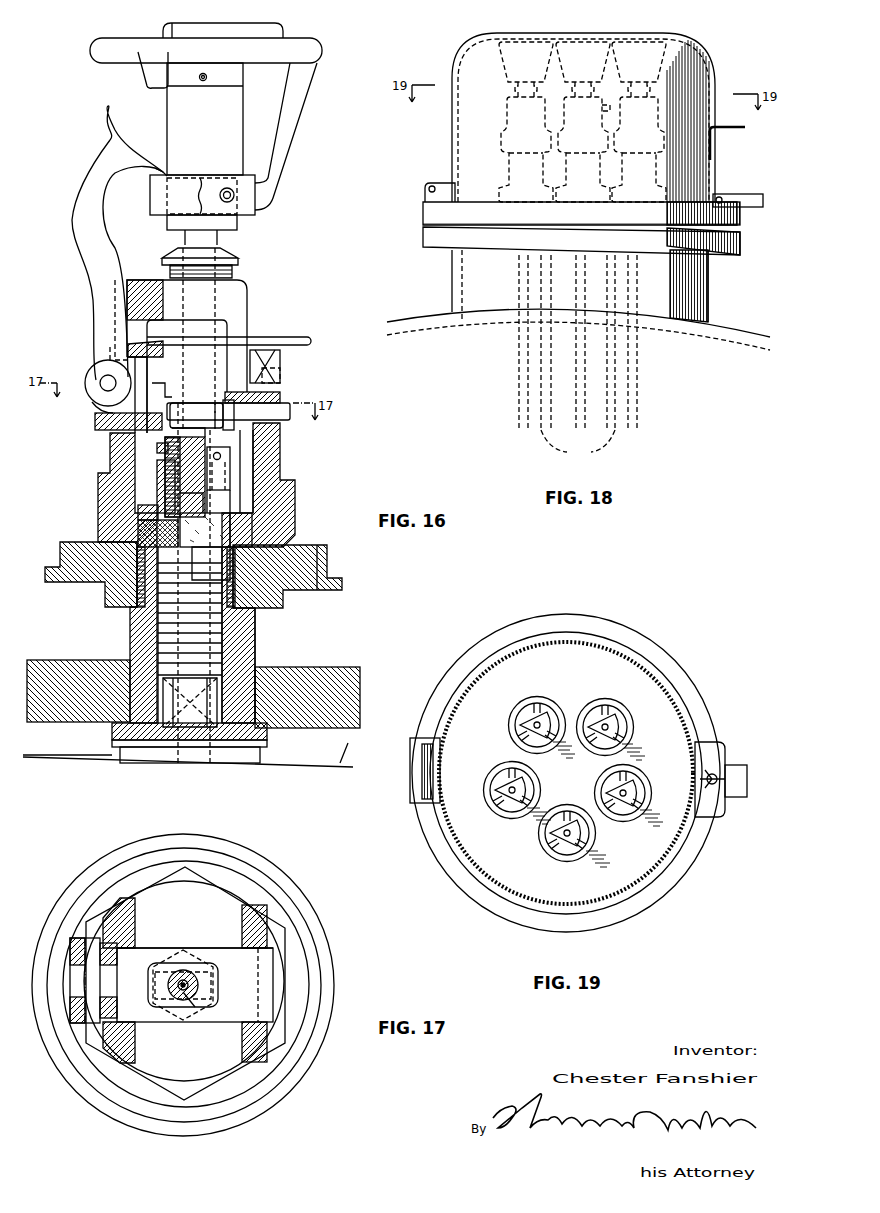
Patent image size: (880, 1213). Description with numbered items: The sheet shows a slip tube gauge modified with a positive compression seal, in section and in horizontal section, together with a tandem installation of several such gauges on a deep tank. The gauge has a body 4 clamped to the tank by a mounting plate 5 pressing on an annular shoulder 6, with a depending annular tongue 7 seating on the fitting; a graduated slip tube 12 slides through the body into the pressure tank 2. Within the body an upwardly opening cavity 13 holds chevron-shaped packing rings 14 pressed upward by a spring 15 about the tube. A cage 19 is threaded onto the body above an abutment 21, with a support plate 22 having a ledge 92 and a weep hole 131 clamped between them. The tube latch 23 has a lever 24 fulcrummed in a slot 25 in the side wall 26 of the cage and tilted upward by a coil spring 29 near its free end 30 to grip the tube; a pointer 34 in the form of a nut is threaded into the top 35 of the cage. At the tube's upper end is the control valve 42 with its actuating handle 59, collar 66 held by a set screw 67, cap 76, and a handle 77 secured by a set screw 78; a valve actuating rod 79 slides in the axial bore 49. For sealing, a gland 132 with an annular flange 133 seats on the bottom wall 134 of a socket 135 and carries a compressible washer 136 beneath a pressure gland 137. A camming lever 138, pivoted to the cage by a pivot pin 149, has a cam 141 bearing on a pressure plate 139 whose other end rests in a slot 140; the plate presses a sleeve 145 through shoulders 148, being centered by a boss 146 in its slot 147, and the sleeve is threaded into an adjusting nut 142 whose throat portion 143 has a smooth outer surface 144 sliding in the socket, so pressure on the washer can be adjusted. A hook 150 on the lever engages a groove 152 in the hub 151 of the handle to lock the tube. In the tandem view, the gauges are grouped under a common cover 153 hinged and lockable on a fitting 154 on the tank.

In FIG. 18, the pressure tank 2 is at (728, 328).
In FIG. 16, the body 4 is at (255, 637).
In FIG. 18, the body 4 is at (509, 168).
In FIG. 16, the mounting plate 5 is at (317, 667).
In FIG. 16, the annular shoulder 6 is at (255, 723).
In FIG. 16, the annular tongue 7 is at (260, 754).
In FIG. 16, the slip tube 12 is at (217, 237).
In FIG. 17, the slip tube 12 is at (200, 993).
In FIG. 18, the slip tube 12 is at (578, 360).
In FIG. 16, the cavity 13 is at (217, 690).
In FIG. 16, the packing rings 14 is at (222, 632).
In FIG. 16, the spring 15 is at (220, 707).
In FIG. 16, the cage 19 is at (254, 304).
In FIG. 17, the cage 19 is at (250, 903).
In FIG. 18, the cage 19 is at (502, 113).
In FIG. 16, the abutment 21 is at (250, 603).
In FIG. 16, the support plate 22 is at (60, 542).
In FIG. 17, the support plate 22 is at (267, 857).
In FIG. 16, the tube latch 23 is at (285, 330).
In FIG. 16, the lever 24 is at (285, 352).
In FIG. 16, the slot 25 is at (128, 320).
In FIG. 17, the side wall 26 is at (135, 918).
In FIG. 16, the coil spring 29 is at (274, 372).
In FIG. 16, the free end 30 is at (311, 340).
In FIG. 16, the pointer 34 is at (238, 256).
In FIG. 16, the top 35 is at (147, 280).
In FIG. 16, the control valve 42 is at (250, 129).
In FIG. 17, the axial bore 49 is at (150, 995).
In FIG. 16, the actuating handle 59 is at (213, 23).
In FIG. 19, the actuating handle 59 is at (597, 712).
In FIG. 16, the collar 66 is at (247, 80).
In FIG. 16, the set screw 67 is at (206, 77).
In FIG. 16, the cap 76 is at (237, 222).
In FIG. 16, the handle 77 is at (310, 45).
In FIG. 18, the handle 77 is at (500, 50).
In FIG. 19, the handle 77 is at (647, 773).
In FIG. 16, the set screw 78 is at (234, 195).
In FIG. 17, the valve actuating rod 79 is at (190, 1008).
In FIG. 16, the ledge 92 is at (337, 574).
In FIG. 17, the ledge 92 is at (290, 890).
In FIG. 16, the weep hole 131 is at (317, 545).
In FIG. 16, the gland 132 is at (233, 562).
In FIG. 16, the annular flange 133 is at (228, 548).
In FIG. 16, the bottom wall 134 is at (205, 520).
In FIG. 16, the socket 135 is at (182, 577).
In FIG. 16, the compressible washer 136 is at (138, 533).
In FIG. 16, the pressure gland 137 is at (138, 520).
In FIG. 16, the camming lever 138 is at (72, 246).
In FIG. 16, the pressure plate 139 is at (238, 422).
In FIG. 17, the pressure plate 139 is at (273, 985).
In FIG. 16, the slot 140 is at (282, 420).
In FIG. 17, the slot 140 is at (242, 950).
In FIG. 16, the cam 141 is at (112, 417).
In FIG. 16, the adjusting nut 142 is at (233, 451).
In FIG. 16, the throat portion 143 is at (230, 470).
In FIG. 16, the outer surface 144 is at (151, 486).
In FIG. 16, the sleeve 145 is at (208, 397).
In FIG. 17, the sleeve 145 is at (205, 979).
In FIG. 16, the boss 146 is at (188, 412).
In FIG. 17, the boss 146 is at (155, 975).
In FIG. 16, the slot 147 is at (160, 443).
In FIG. 17, the slot 147 is at (148, 963).
In FIG. 16, the shoulders 148 is at (196, 415).
In FIG. 17, the shoulders 148 is at (177, 948).
In FIG. 16, the pivot pin 149 is at (90, 378).
In FIG. 17, the pivot pin 149 is at (90, 938).
In FIG. 16, the hook 150 is at (163, 170).
In FIG. 16, the hub 151 is at (150, 193).
In FIG. 16, the groove 152 is at (164, 171).
In FIG. 18, the cover 153 is at (713, 62).
In FIG. 19, the cover 153 is at (495, 665).
In FIG. 18, the fitting 154 is at (423, 207).
In FIG. 19, the fitting 154 is at (660, 660).